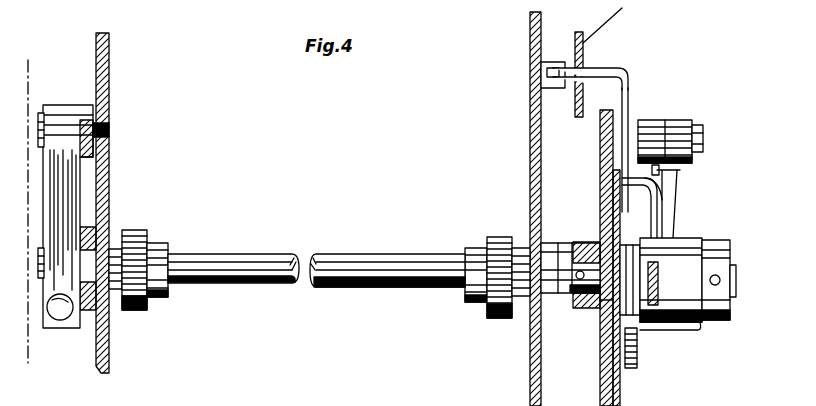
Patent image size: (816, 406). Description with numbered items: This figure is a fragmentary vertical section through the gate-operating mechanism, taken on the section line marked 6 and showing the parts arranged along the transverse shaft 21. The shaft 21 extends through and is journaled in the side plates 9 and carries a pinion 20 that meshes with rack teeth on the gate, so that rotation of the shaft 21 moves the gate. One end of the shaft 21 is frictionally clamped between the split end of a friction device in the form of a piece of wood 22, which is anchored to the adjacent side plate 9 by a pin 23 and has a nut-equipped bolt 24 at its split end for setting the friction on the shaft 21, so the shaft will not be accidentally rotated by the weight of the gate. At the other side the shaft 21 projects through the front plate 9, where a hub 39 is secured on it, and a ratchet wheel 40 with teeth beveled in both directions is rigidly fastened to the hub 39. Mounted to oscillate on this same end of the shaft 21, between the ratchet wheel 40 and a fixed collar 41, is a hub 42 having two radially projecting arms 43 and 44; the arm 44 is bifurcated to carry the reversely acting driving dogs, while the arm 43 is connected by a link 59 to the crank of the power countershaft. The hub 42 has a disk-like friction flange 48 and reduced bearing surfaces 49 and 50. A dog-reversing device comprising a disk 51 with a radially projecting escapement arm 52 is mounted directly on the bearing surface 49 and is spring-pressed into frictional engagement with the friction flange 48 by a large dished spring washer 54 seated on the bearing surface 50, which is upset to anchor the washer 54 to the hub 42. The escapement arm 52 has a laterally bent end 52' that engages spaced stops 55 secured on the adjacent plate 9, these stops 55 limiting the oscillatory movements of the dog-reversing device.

The section line 6 is at (36, 213).
The side plate 9 is at (109, 158).
The pinion 20 is at (147, 231).
The transverse shaft 21 is at (237, 262).
The friction device 22 is at (60, 150).
The pin 23 is at (38, 150).
The nut-equipped bolt 24 is at (62, 320).
The hub 39 is at (583, 243).
The ratchet wheel 40 is at (601, 137).
The fixed collar 41 is at (718, 257).
The oscillatory hub 42 is at (670, 252).
The arm 43 is at (672, 192).
The arm 44 is at (688, 321).
The friction flange 48 is at (637, 356).
The bearing surface 49 is at (603, 319).
The bearing surface 50 is at (592, 306).
The disk 51 is at (688, 177).
The escapement arm 52 is at (653, 147).
The laterally bent end 52' is at (601, 56).
The dished spring washer 54 is at (607, 356).
The stop 55 is at (552, 65).
The link 59 is at (688, 124).